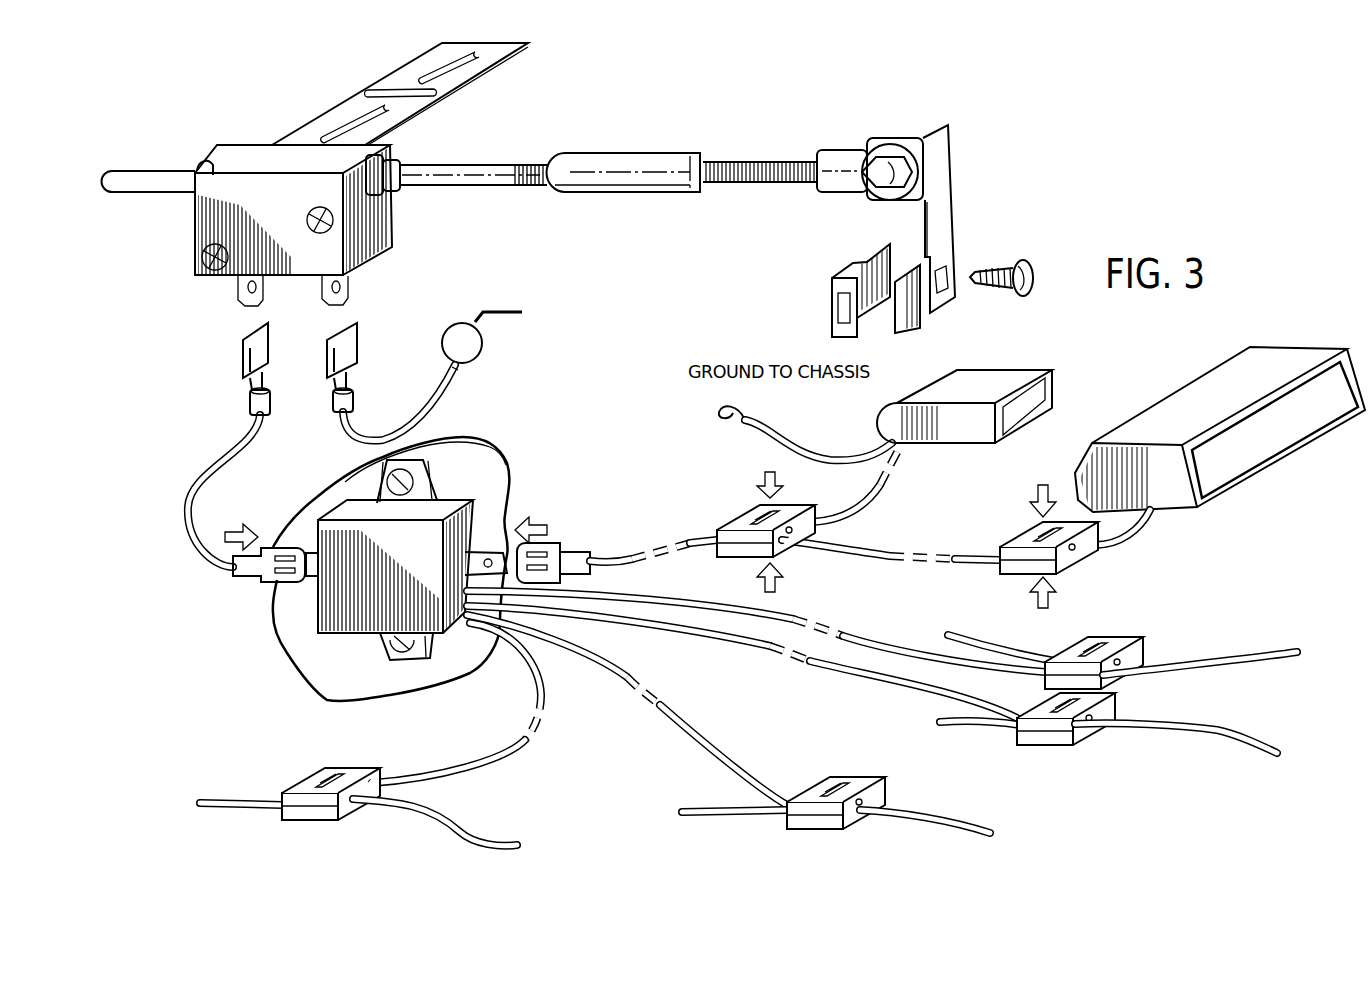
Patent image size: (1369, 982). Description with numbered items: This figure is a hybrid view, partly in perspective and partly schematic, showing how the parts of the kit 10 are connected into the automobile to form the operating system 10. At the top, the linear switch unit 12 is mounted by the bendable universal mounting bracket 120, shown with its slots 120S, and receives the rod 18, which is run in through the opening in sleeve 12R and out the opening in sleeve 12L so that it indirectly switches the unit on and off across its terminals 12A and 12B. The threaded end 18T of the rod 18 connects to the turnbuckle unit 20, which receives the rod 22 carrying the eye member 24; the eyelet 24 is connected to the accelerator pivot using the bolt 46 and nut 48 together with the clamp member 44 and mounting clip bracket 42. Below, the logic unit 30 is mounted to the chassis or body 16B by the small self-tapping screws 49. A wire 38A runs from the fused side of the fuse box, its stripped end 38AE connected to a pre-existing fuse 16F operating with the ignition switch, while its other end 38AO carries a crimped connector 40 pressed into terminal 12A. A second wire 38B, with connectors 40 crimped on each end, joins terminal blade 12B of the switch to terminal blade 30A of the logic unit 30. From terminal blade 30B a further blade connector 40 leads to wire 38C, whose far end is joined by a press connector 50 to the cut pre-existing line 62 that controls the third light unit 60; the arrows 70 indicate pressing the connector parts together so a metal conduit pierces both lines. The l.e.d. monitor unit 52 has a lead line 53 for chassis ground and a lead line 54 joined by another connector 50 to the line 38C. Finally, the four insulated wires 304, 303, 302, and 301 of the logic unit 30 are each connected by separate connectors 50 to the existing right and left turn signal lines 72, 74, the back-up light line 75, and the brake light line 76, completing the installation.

The kit 10 is at (657, 470).
The linear switch unit 12 is at (253, 163).
The terminal 12A is at (348, 296).
The terminal blade 12B is at (243, 293).
The sleeve 12L is at (203, 160).
The sleeve 12R is at (393, 160).
The universal mounting bracket 120 is at (347, 113).
The bracket slots 120S is at (437, 90).
The chassis or body 16B is at (497, 478).
The fuse 16F is at (482, 350).
The rod 18 is at (143, 166).
The threaded end 18T is at (528, 160).
The turnbuckle unit 20 is at (610, 160).
The rod 22 is at (743, 160).
The eye member 24 is at (835, 158).
The logic unit 30 is at (323, 633).
The terminal blade 30A is at (313, 580).
The terminal blade 30B is at (487, 548).
The insulated wire 38A is at (352, 437).
The wire end 38AE is at (457, 368).
The wire end 38AO is at (355, 388).
The wire 38B is at (185, 518).
The wire 38C is at (603, 557).
The connector 40 is at (243, 362).
The mounting clip bracket 42 is at (832, 300).
The clamp member 44 is at (943, 230).
The bolt 46 is at (880, 150).
The nut 48 is at (1027, 265).
The small self-tapping sheet metal screw 49 is at (412, 482).
The wire connector 50 is at (742, 523).
The l.e.d. monitor unit 52 is at (998, 380).
The insulated lead line 53 is at (832, 458).
The insulated lead line 54 is at (860, 503).
The third light unit 60 is at (1182, 407).
The pre-existing line 62 is at (1143, 527).
The arrows 70 is at (778, 476).
The existing right turn signal line 72 is at (473, 835).
The existing left turn signal line 74 is at (937, 810).
The existing back-up light line 75 is at (1212, 735).
The existing brake light line 76 is at (1227, 652).
The insulated wire 301 is at (520, 747).
The insulated wire 302 is at (677, 727).
The insulated wire 303 is at (767, 653).
The insulated wire 304 is at (843, 633).